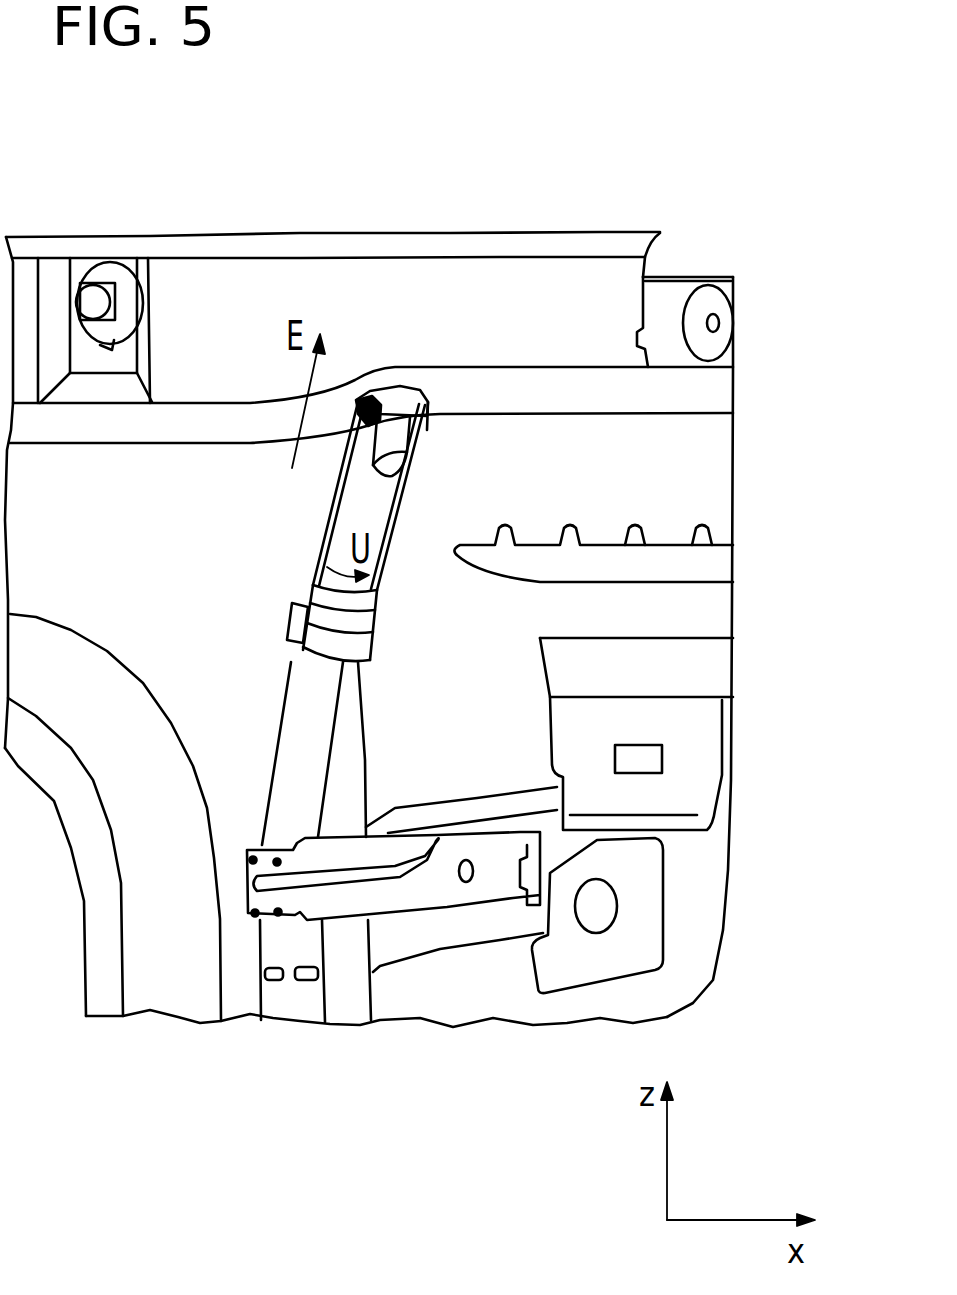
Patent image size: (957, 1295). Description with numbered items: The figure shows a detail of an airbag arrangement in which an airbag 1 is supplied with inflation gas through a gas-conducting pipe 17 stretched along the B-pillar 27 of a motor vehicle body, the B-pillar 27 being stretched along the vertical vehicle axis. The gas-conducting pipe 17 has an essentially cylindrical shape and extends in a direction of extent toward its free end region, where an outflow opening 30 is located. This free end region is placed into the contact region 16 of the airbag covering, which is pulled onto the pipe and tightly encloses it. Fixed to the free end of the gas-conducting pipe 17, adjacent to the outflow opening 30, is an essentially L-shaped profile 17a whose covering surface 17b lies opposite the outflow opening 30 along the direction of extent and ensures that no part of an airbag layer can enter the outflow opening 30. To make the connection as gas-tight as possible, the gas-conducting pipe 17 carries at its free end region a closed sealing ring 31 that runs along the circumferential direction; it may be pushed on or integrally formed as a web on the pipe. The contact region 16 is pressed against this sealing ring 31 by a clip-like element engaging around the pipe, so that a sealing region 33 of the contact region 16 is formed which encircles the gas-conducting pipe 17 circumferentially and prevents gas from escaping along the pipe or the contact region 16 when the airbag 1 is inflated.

The airbag 1 is at (607, 385).
The contact region 16 is at (395, 541).
The gas-conducting pipe 17 is at (380, 500).
The L-shaped profile 17a is at (428, 413).
The covering surface 17b is at (397, 398).
The B-pillar 27 is at (232, 851).
The outflow opening 30 is at (375, 396).
The sealing ring 31 is at (310, 610).
The sealing region 33 is at (372, 619).